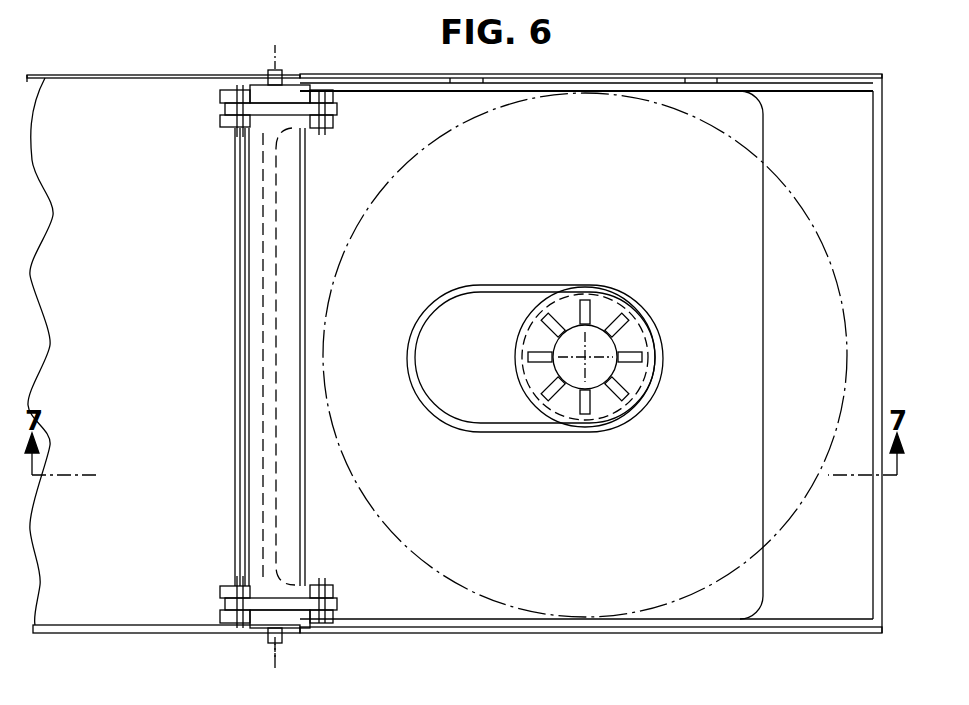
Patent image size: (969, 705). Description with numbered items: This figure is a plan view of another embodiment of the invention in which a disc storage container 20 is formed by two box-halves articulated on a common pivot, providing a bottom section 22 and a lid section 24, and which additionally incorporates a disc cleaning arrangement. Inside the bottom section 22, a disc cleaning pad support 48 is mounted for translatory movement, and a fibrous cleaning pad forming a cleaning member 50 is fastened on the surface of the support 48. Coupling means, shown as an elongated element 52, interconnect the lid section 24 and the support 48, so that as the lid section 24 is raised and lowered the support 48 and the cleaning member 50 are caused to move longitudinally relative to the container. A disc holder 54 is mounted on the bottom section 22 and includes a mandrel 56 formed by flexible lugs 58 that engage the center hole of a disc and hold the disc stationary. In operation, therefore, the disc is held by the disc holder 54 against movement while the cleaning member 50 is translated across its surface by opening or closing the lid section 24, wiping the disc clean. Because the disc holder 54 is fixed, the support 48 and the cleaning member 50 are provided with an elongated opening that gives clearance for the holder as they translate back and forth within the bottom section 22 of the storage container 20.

The storage container 20 is at (706, 64).
The bottom section 22 is at (880, 602).
The lid section 24 is at (187, 612).
The disc cleaning pad support 48 is at (764, 133).
The cleaning member 50 is at (725, 220).
The elongated element 52 is at (292, 106).
The disc holder 54 is at (629, 294).
The mandrel 56 is at (600, 340).
The flexible lugs 58 is at (624, 332).